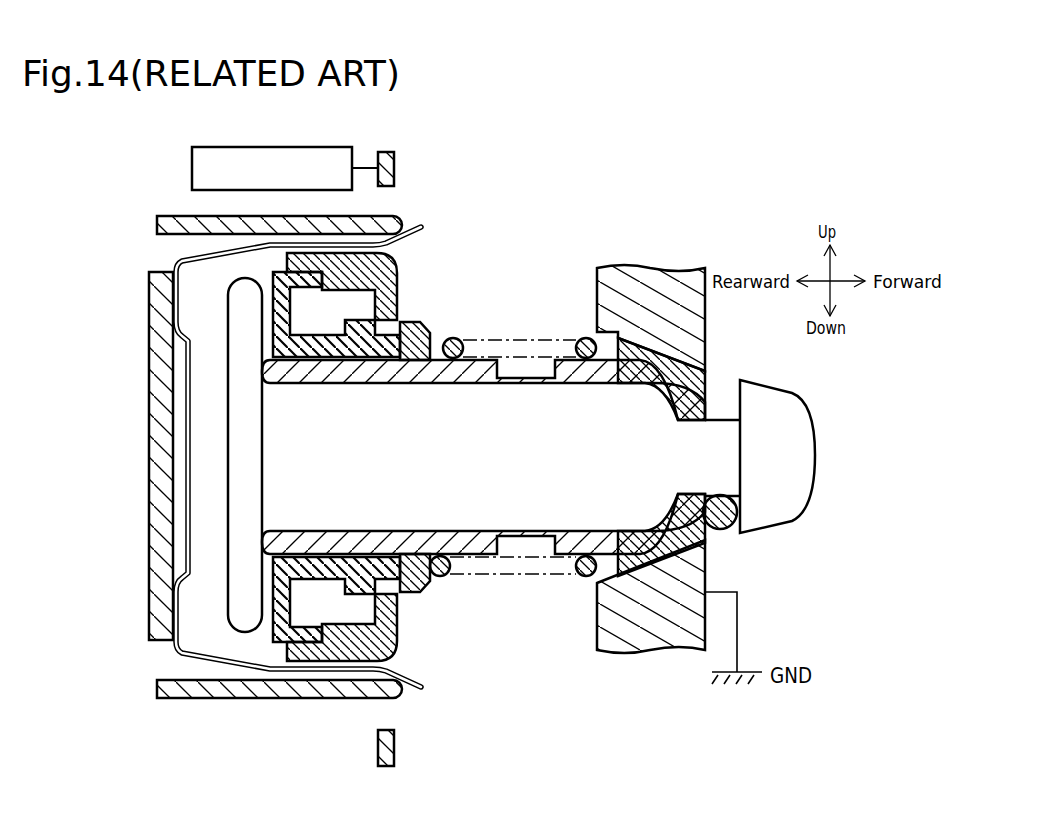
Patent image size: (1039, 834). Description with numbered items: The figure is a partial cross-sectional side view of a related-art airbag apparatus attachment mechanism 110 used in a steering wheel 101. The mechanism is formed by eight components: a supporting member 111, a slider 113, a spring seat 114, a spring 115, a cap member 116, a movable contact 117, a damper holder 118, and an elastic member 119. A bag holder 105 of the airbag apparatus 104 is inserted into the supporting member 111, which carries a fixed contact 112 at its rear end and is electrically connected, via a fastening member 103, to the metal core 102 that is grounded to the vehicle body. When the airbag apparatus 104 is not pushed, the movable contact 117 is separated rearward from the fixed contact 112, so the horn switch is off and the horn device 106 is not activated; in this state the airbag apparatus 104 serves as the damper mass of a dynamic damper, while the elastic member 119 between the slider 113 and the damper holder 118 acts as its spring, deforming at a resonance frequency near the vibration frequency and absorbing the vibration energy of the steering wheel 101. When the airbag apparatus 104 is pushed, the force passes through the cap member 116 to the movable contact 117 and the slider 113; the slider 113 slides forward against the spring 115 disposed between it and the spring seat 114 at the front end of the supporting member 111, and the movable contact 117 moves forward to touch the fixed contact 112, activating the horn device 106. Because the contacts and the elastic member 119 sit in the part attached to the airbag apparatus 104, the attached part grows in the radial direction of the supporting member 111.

The steering wheel 101 is at (658, 439).
The metal core 102 is at (636, 276).
The fastening member 103 is at (731, 529).
The airbag apparatus 104 is at (307, 753).
The bag holder 105 is at (378, 742).
The horn device 106 is at (194, 172).
The attachment mechanism 110 is at (506, 248).
The supporting member 111 is at (524, 522).
The fixed contact 112 is at (259, 498).
The slider 113 is at (434, 358).
The spring seat 114 is at (698, 398).
The spring 115 is at (530, 330).
The cap member 116 is at (150, 492).
The movable contact 117 is at (206, 380).
The damper holder 118 is at (378, 288).
The elastic member 119 is at (368, 606).